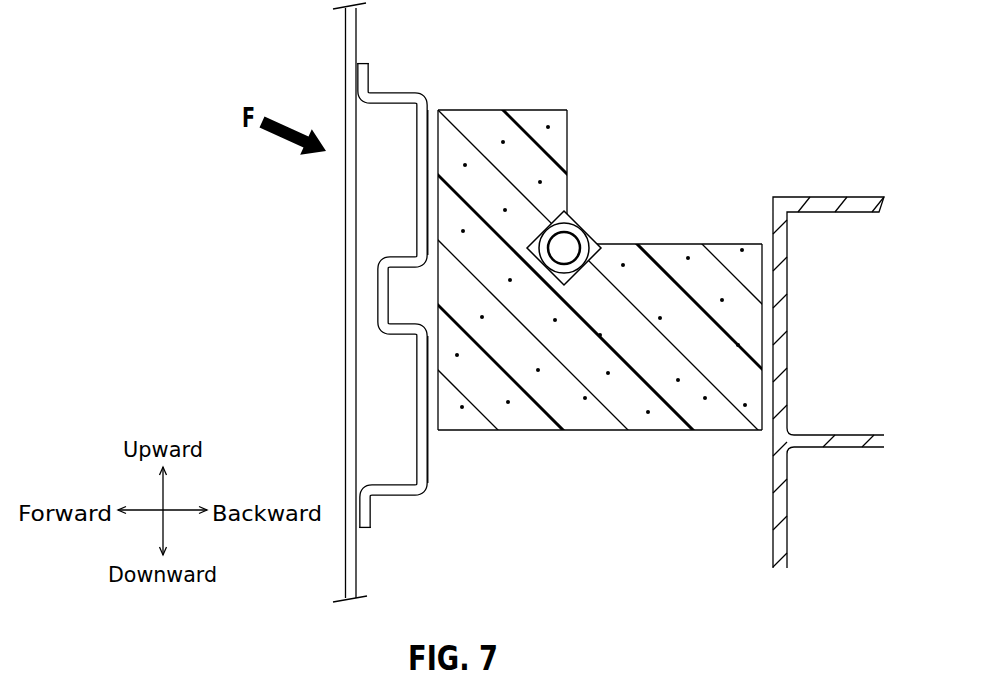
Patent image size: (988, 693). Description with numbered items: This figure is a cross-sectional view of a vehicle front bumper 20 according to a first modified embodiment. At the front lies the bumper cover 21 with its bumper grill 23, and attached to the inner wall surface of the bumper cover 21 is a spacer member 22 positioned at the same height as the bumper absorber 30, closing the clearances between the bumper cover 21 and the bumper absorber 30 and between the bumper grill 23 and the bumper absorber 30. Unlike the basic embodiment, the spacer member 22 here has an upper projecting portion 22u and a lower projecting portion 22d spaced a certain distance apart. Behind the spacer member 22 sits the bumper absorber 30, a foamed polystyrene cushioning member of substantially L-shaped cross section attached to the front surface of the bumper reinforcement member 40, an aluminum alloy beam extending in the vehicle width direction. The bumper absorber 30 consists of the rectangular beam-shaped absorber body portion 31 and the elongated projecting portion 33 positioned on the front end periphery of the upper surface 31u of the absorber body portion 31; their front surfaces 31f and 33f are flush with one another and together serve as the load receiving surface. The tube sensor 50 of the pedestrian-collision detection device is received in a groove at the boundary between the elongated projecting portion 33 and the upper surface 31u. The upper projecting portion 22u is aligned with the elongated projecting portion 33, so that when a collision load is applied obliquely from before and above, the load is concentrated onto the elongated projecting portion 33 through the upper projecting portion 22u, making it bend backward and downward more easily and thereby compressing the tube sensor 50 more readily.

The front bumper 20 is at (325, 236).
The bumper cover 21 is at (345, 380).
The bumper grill 23 is at (350, 302).
The spacer member 22 is at (409, 511).
The upper projecting portion 22u is at (428, 163).
The lower projecting portion 22d is at (428, 458).
The bumper absorber 30 is at (733, 213).
The absorber body portion 31 is at (663, 378).
The upper surface of the absorber body portion 31u is at (678, 244).
The front surface of the absorber body portion 31f is at (438, 290).
The elongated projecting portion 33 is at (493, 121).
The front surface of the elongated projecting portion 33f is at (438, 138).
The bumper reinforcement member 40 is at (863, 195).
The tube sensor 50 is at (581, 229).